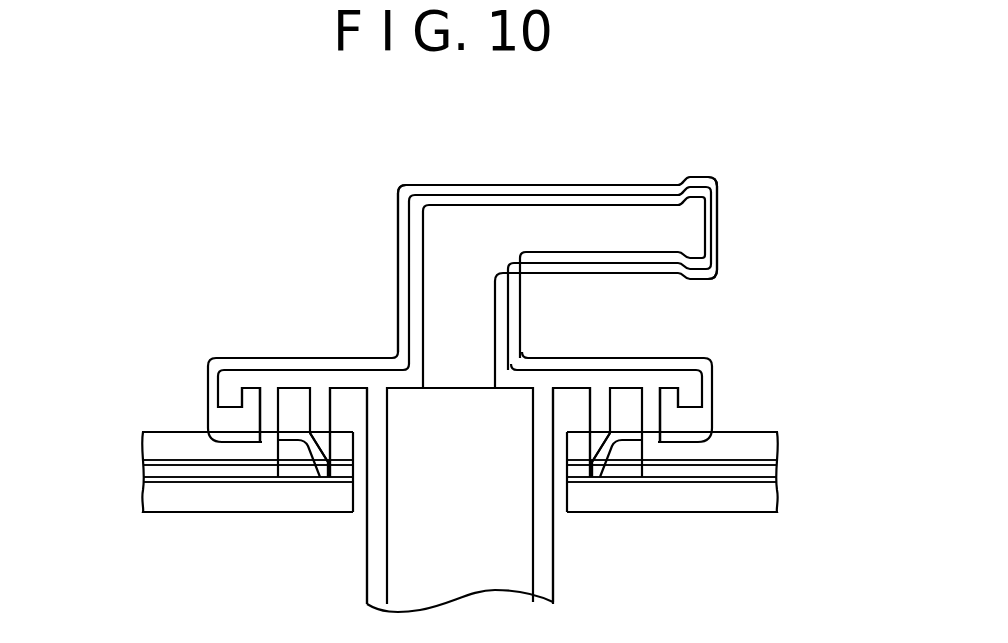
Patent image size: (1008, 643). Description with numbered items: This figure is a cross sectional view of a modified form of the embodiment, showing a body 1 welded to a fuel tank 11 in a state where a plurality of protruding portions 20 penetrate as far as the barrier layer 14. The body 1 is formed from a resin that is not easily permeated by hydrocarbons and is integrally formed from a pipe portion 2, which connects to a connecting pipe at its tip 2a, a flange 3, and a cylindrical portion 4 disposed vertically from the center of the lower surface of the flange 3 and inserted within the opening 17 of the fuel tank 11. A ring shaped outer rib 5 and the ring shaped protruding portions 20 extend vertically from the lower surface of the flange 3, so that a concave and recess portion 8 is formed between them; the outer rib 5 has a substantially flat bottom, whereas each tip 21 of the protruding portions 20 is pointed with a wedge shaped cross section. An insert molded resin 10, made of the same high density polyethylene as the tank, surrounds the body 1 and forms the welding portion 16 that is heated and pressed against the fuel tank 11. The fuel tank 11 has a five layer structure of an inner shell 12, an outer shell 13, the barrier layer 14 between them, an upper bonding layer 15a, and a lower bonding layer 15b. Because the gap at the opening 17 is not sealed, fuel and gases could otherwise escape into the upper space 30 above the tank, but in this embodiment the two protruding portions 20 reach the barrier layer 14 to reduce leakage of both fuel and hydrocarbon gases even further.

The body 1 is at (368, 158).
The pipe portion 2 is at (522, 205).
The tip of the pipe portion 2a is at (720, 205).
The flange 3 is at (253, 378).
The cylindrical portion 4 is at (372, 573).
The outer rib 5 is at (227, 385).
The concave and recess portion 8 is at (253, 395).
The insert molded resin 10 is at (610, 188).
The fuel tank 11 is at (778, 505).
The inner shell 12 is at (163, 505).
The outer shell 13 is at (150, 437).
The barrier layer 14 is at (150, 473).
The upper bonding layer 15a is at (148, 462).
The lower bonding layer 15b is at (142, 497).
The welding portion 16 is at (245, 442).
The opening 17 is at (360, 510).
The protruding portion 20 is at (272, 395).
The tip of the protruding portion 21 is at (270, 478).
The upper space 30 is at (360, 410).